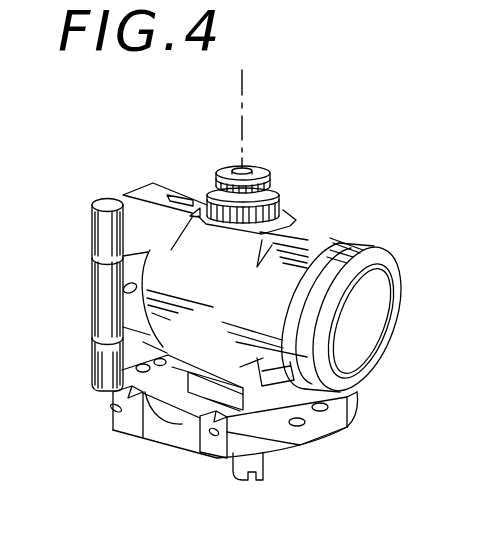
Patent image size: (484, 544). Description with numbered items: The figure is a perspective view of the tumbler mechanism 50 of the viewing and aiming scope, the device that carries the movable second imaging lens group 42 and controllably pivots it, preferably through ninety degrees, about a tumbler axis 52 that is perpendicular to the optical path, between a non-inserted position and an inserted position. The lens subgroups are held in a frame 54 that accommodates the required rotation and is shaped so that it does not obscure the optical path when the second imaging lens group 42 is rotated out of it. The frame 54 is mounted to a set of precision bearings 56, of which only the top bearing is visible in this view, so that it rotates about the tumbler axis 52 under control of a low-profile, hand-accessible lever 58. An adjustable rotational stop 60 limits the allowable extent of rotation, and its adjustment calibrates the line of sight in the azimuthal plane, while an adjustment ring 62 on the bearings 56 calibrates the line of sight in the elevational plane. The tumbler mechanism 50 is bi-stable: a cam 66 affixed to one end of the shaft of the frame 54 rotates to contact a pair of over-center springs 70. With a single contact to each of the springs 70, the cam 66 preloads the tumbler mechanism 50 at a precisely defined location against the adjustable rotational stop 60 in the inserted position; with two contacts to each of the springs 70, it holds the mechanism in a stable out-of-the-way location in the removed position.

The second imaging lens group 42 is at (363, 236).
The tumbler mechanism 50 is at (277, 160).
The tumbler axis 52 is at (245, 82).
The frame 54 is at (337, 417).
The precision bearings 56 is at (279, 186).
The lever 58 is at (250, 480).
The adjustable rotational stop 60 is at (96, 290).
The adjustment ring 62 is at (201, 211).
The cam 66 is at (200, 390).
The over-center springs 70 is at (155, 390).